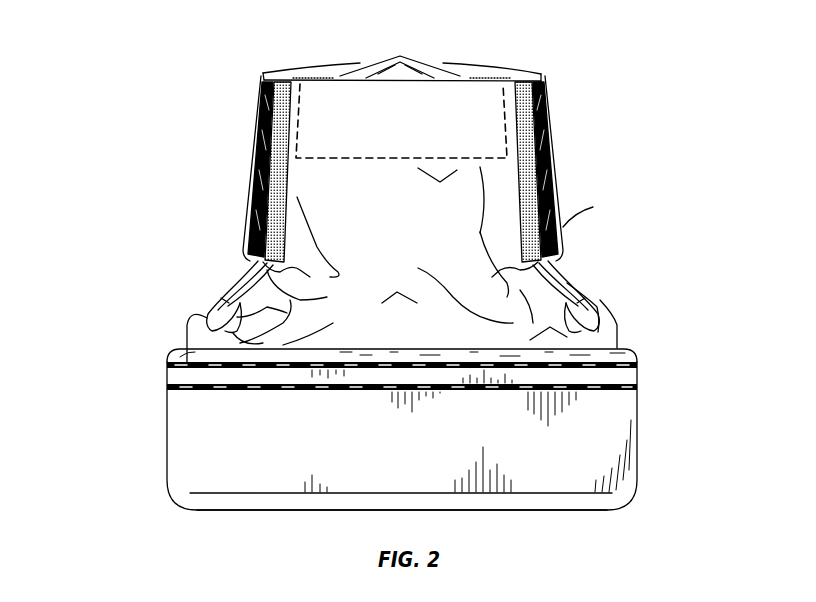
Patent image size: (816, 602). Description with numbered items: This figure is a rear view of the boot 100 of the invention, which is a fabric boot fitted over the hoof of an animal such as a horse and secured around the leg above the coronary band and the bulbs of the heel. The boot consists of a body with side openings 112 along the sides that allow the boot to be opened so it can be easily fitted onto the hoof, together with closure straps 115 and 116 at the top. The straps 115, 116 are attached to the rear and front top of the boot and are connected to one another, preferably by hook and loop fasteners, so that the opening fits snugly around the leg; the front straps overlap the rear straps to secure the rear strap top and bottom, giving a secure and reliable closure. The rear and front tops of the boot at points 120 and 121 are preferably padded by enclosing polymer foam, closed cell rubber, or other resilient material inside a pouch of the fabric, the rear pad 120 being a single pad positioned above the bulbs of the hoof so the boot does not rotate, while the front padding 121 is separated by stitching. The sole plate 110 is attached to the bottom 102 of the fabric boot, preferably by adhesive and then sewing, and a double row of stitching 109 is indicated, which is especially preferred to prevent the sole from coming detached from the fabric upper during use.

The container cover assembly 100 is at (157, 79).
The container 102 is at (666, 341).
The double row of stitching 109 is at (167, 363).
The sole plate 110 is at (403, 472).
The side openings 112 is at (240, 300).
The closure strap 115 is at (240, 227).
The closure strap 116 is at (255, 160).
The rear padding 120 is at (452, 104).
The front padding 121 is at (402, 57).